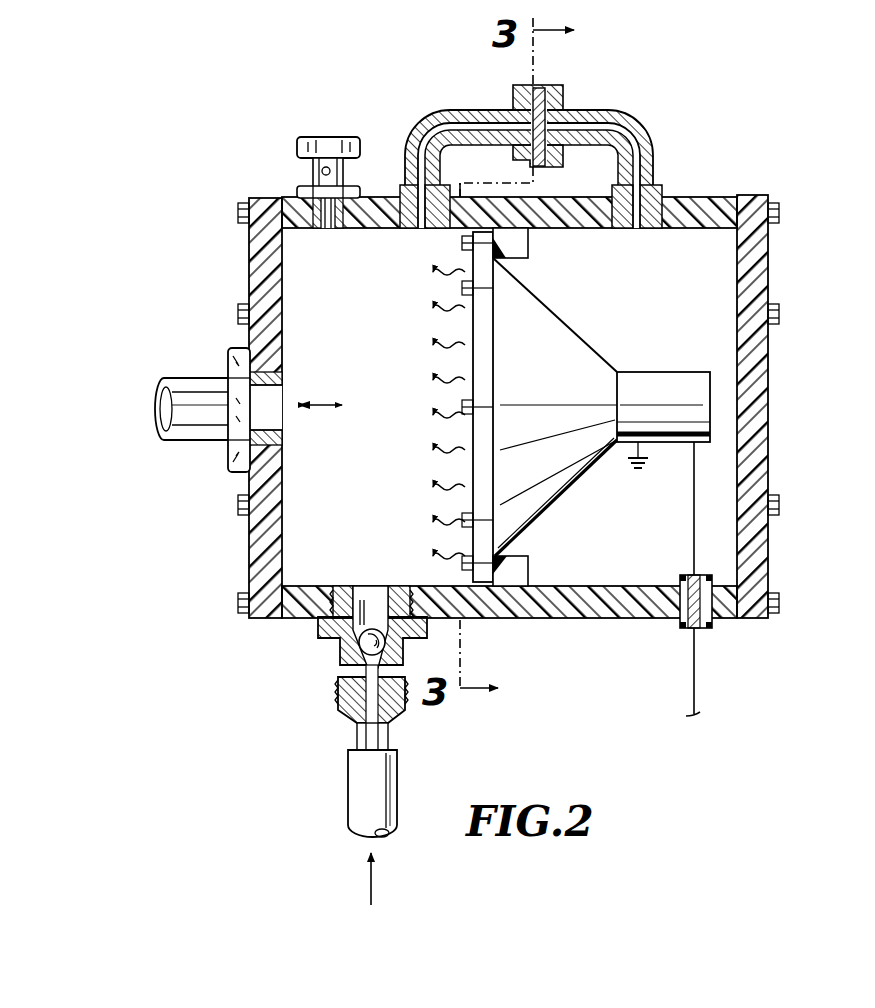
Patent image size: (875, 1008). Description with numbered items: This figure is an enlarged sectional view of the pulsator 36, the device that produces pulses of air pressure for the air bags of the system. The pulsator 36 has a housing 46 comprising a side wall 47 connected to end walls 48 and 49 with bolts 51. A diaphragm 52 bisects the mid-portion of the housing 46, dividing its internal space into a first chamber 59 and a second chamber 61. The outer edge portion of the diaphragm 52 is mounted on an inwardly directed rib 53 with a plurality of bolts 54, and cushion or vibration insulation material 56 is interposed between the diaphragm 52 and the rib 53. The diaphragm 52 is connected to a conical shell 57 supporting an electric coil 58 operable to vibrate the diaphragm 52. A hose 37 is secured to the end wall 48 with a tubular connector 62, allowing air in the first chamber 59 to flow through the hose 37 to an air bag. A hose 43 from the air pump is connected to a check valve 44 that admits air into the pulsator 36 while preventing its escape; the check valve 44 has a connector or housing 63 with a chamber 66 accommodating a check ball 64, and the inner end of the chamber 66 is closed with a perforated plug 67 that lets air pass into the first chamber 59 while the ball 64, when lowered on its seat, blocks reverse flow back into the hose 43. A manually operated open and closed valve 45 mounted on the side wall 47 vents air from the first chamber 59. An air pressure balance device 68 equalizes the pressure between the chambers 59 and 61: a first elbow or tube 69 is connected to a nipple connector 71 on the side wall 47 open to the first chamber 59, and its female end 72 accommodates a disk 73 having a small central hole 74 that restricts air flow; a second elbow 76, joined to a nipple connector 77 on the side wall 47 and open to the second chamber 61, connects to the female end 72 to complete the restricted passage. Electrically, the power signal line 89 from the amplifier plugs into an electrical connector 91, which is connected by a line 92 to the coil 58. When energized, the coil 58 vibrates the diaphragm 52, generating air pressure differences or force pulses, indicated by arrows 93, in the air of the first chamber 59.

The pulsator 36 is at (777, 116).
The hose 37 is at (188, 437).
The hose 43 is at (357, 795).
The check valve 44 is at (331, 649).
The manually operated open and closed valve 45 is at (335, 140).
The housing 46 is at (590, 622).
The side wall 47 is at (737, 198).
The end wall 48 is at (262, 272).
The end wall 49 is at (760, 270).
The bolts 51 is at (238, 213).
The diaphragm 52 is at (494, 465).
The inwardly directed rib 53 is at (528, 245).
The bolts 54 is at (462, 244).
The cushion or vibration insulation material 56 is at (512, 558).
The conical shell 57 is at (578, 333).
The electric coil 58 is at (664, 384).
The first chamber 59 is at (373, 321).
The second chamber 61 is at (707, 279).
The tubular connector 62 is at (232, 362).
The connector or housing 63 is at (318, 628).
The check ball 64 is at (342, 658).
The chamber 66 is at (384, 622).
The perforated plug 67 is at (370, 600).
The air pressure balance device 68 is at (545, 128).
The first elbow or tube 69 is at (438, 115).
The nipple connector 71 is at (400, 192).
The female end 72 is at (543, 88).
The disk 73 is at (528, 100).
The small central hole 74 is at (562, 112).
The second elbow 76 is at (648, 137).
The nipple connector 77 is at (665, 197).
The line 89 is at (697, 691).
The electrical connector 91 is at (692, 630).
The line 92 is at (693, 505).
The arrows 93 is at (418, 434).